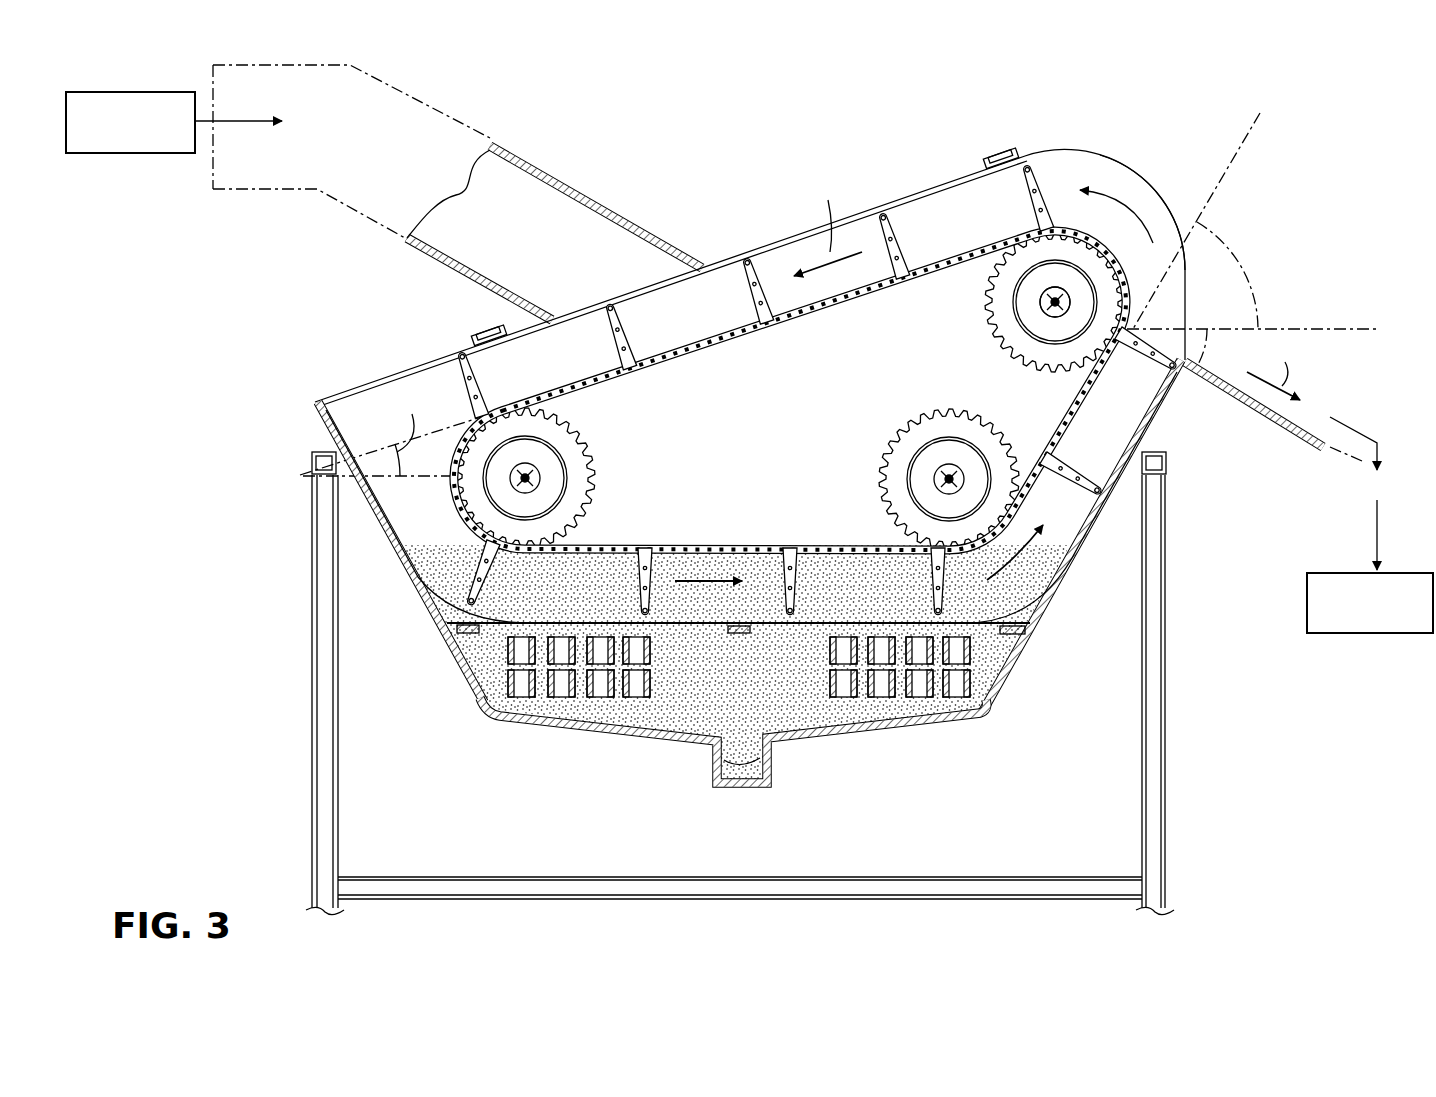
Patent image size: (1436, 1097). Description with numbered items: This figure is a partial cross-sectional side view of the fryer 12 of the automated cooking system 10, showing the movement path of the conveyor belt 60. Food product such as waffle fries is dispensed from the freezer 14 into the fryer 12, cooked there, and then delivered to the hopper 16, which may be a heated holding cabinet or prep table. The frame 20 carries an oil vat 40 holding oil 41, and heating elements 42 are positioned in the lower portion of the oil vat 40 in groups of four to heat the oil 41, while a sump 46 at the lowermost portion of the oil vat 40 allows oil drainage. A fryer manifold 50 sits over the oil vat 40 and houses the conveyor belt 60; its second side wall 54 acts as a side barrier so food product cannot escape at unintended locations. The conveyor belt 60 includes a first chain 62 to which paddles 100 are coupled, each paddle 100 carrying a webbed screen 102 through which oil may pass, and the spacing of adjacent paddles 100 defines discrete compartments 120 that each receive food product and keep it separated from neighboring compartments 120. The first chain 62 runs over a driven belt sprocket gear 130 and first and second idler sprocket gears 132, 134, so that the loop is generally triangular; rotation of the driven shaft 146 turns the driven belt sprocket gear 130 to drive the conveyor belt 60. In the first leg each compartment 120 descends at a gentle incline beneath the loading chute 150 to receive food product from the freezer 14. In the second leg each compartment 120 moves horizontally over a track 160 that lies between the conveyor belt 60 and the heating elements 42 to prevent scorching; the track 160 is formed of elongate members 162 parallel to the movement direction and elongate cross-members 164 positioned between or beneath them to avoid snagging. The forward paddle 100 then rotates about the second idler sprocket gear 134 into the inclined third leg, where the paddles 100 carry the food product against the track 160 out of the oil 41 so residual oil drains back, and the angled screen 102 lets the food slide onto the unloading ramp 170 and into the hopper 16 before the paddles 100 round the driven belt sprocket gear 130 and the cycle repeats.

The automated cooking system 10 is at (283, 317).
The fryer 12 is at (383, 372).
The freezer 14 is at (125, 154).
The hopper 16 is at (1380, 636).
The frame 20 is at (1170, 782).
The oil vat 40 is at (715, 573).
The oil 41 is at (845, 587).
The heating elements 42 is at (558, 698).
The sump 46 is at (768, 775).
The fryer manifold 50 is at (1156, 167).
The second side wall 54 is at (1159, 180).
The conveyor belt 60 is at (1056, 172).
The first chain 62 is at (840, 311).
The paddles 100 is at (758, 268).
The screen 102 is at (1137, 344).
The compartments 120 is at (754, 294).
The driven belt sprocket gear 130 is at (988, 300).
The first idler sprocket gear 132 is at (558, 418).
The second idler sprocket gear 134 is at (957, 414).
The driven shaft 146 is at (1046, 307).
The loading chute 150 is at (556, 183).
The track 160 is at (446, 604).
The elongate members 162 is at (437, 593).
The elongate cross-members 164 is at (314, 406).
The unloading ramp 170 is at (1257, 413).